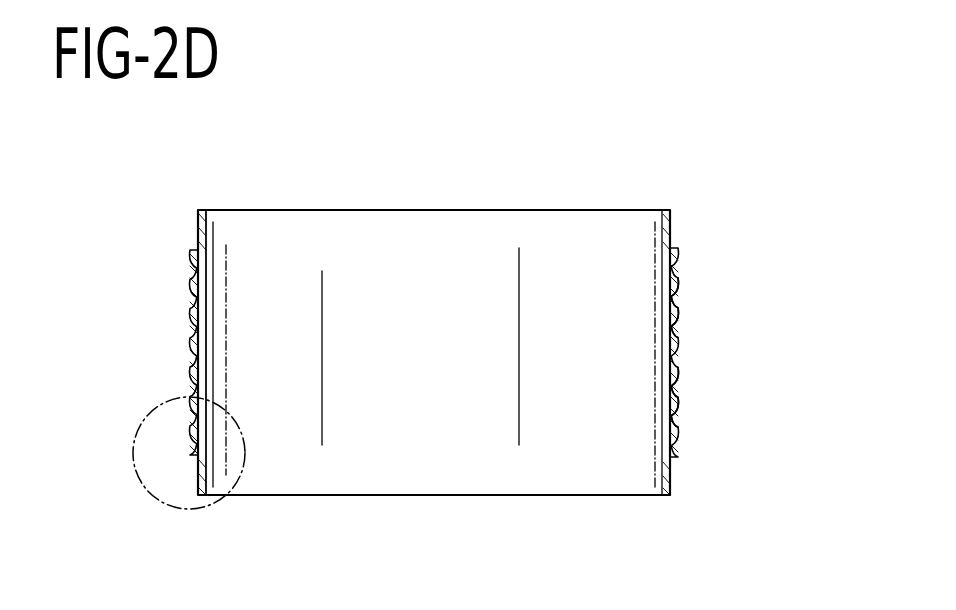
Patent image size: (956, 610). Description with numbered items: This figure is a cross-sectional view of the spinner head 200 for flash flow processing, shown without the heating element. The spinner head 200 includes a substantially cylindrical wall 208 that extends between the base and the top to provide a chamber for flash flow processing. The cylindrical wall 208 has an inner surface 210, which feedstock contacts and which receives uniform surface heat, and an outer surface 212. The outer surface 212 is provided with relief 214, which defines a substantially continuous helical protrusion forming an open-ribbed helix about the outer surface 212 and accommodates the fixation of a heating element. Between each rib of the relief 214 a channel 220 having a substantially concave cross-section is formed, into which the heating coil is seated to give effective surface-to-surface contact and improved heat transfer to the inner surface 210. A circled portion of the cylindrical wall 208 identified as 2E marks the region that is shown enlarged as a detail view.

The spinner head 200 is at (676, 125).
The substantially cylindrical wall 208 is at (119, 262).
The inner surface 210 is at (205, 258).
The outer surface 212 is at (674, 240).
The relief 214 is at (677, 335).
The channel 220 is at (677, 372).
The detail portion 2E is at (156, 497).